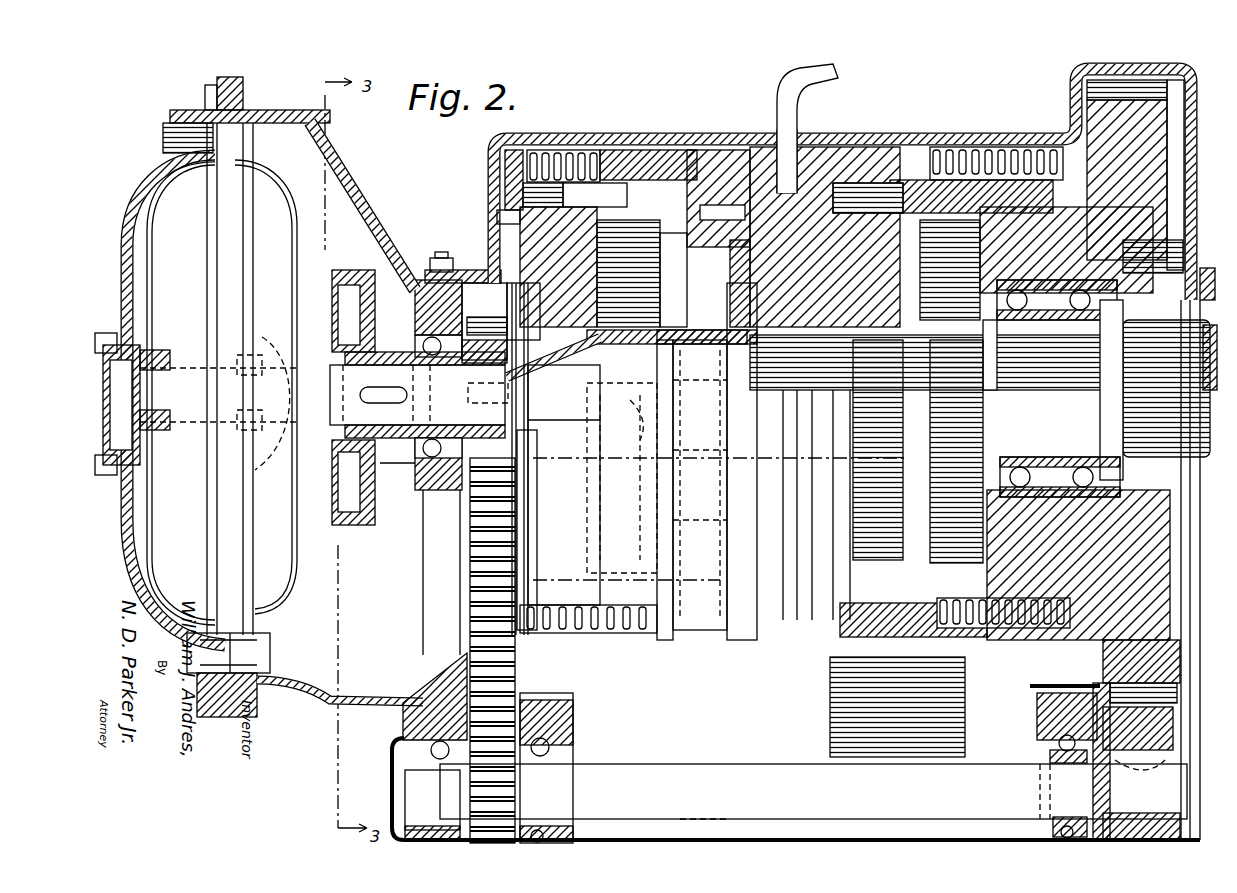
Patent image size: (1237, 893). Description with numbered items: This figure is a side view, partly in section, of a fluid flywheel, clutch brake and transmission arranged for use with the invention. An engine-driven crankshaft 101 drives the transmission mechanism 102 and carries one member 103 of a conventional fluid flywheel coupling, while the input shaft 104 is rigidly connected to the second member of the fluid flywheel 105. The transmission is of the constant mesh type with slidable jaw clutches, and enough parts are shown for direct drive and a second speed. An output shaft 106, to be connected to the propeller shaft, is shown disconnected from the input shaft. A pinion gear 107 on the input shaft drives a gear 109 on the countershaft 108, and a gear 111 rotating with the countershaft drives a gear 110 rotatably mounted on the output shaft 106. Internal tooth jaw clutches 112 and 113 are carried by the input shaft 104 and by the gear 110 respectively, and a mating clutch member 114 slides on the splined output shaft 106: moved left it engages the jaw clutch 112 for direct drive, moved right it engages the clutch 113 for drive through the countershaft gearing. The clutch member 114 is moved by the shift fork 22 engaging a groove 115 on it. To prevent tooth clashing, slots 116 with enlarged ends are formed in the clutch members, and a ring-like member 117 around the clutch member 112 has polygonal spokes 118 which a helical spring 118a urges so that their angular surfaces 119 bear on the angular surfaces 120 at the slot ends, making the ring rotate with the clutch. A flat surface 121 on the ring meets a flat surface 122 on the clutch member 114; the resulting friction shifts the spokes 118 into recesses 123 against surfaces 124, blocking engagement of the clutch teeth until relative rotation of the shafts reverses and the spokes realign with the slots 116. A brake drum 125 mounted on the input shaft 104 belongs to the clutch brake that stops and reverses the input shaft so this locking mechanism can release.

The shift fork 22 is at (826, 84).
The crankshaft 101 is at (118, 362).
The transmission mechanism 102 is at (579, 123).
The fluid flywheel member 103 is at (150, 177).
The input shaft 104 is at (307, 367).
The fluid flywheel 105 is at (127, 236).
The output shaft 106 is at (983, 390).
The pinion gear 107 is at (483, 322).
The countershaft 108 is at (690, 768).
The gear 109 is at (507, 684).
The gear 110 is at (1088, 631).
The gear 111 is at (1160, 752).
The jaw clutch 112 is at (645, 273).
The jaw clutch 113 is at (918, 451).
The clutch member 114 is at (749, 219).
The groove 115 is at (783, 631).
The slots 116 is at (567, 420).
The ring-like member 117 is at (662, 164).
The spokes 118 is at (620, 197).
The helical spring 118a is at (621, 145).
The angular surfaces 119 is at (680, 414).
The angular surfaces 120 is at (672, 441).
The flat surface 121 is at (763, 134).
The flat surface 122 is at (757, 641).
The recesses 123 is at (640, 350).
The surfaces 124 is at (635, 410).
The brake drum 125 is at (336, 290).